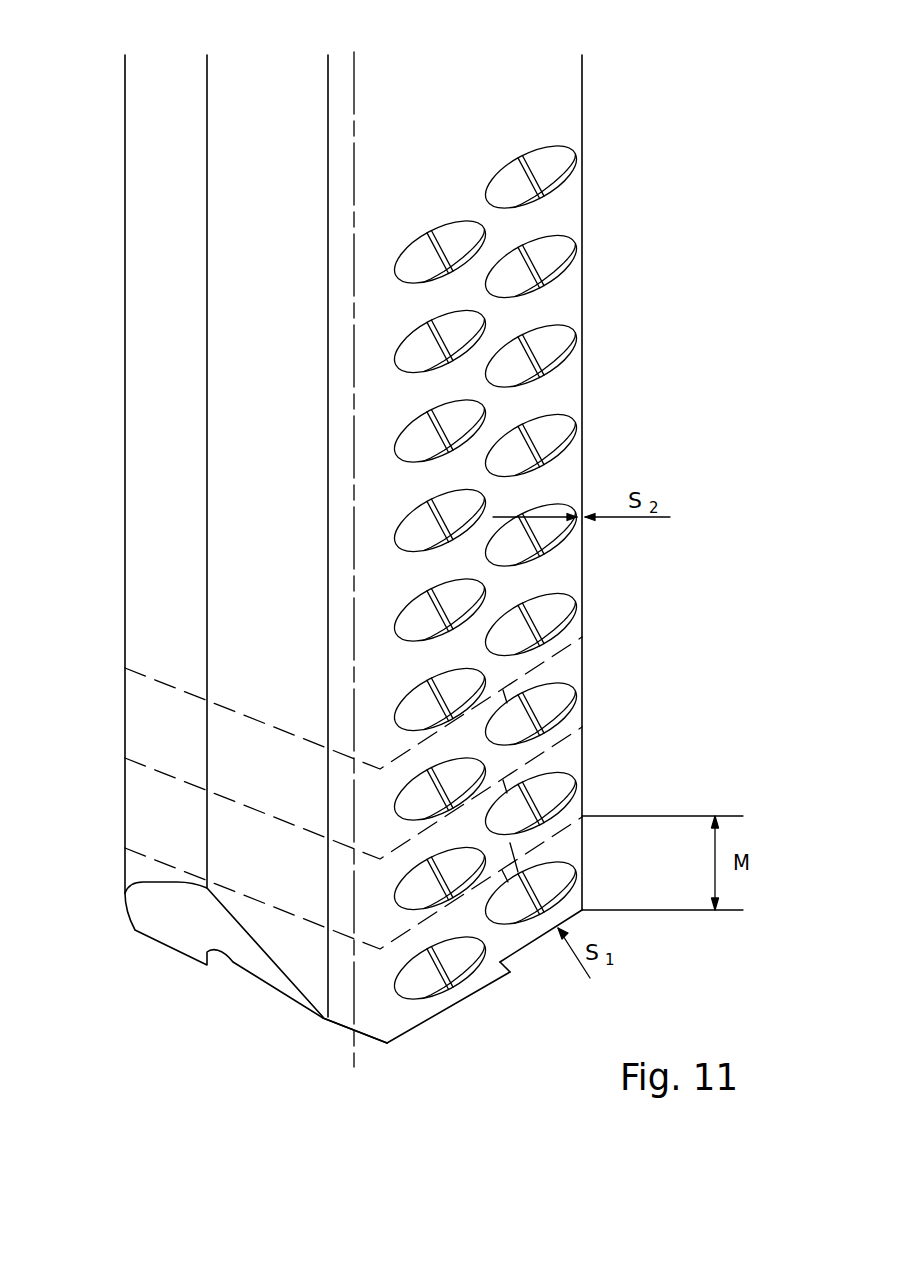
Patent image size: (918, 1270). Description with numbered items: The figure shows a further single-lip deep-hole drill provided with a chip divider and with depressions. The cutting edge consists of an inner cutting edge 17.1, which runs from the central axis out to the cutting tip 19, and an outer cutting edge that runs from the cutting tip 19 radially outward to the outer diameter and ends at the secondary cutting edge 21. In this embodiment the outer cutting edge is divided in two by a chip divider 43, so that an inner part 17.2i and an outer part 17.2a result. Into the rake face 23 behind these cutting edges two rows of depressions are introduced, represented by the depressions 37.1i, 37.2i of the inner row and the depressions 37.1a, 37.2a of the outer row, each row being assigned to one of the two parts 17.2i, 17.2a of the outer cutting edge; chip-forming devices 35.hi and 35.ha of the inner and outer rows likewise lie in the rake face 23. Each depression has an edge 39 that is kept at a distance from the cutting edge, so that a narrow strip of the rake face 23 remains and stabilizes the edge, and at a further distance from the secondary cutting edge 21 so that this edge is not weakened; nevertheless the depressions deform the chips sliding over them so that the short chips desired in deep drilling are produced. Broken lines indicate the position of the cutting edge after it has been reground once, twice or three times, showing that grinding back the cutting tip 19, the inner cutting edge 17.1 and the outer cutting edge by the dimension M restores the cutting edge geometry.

The inner cutting edge 17.1 is at (337, 1027).
The outer cutting edge (outer part) 17.2a is at (575, 921).
The outer cutting edge (inner part) 17.2i is at (413, 1028).
The cutting tip 19 is at (387, 1042).
The secondary cutting edge 21 is at (583, 297).
The rake face 23 is at (563, 387).
The chip-forming device of the outer row 35.ha is at (550, 157).
The chip-forming device of the inner row 35.hi is at (456, 238).
The first depression of the outer row 37.1a is at (557, 882).
The first depression of the inner row 37.1i is at (412, 988).
The second depression of the outer row 37.2a is at (555, 793).
The second depression of the inner row 37.2i is at (415, 900).
The edge of the depression 39 is at (572, 688).
The chip divider 43 is at (520, 968).